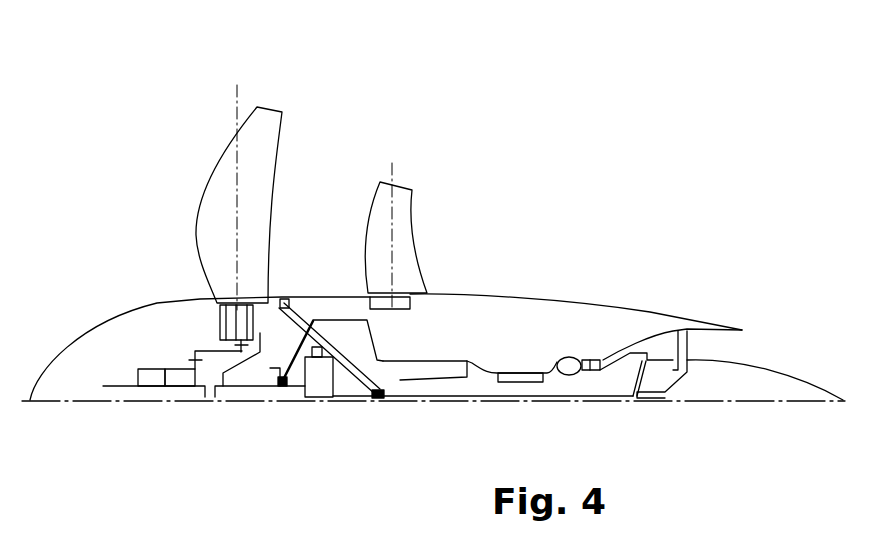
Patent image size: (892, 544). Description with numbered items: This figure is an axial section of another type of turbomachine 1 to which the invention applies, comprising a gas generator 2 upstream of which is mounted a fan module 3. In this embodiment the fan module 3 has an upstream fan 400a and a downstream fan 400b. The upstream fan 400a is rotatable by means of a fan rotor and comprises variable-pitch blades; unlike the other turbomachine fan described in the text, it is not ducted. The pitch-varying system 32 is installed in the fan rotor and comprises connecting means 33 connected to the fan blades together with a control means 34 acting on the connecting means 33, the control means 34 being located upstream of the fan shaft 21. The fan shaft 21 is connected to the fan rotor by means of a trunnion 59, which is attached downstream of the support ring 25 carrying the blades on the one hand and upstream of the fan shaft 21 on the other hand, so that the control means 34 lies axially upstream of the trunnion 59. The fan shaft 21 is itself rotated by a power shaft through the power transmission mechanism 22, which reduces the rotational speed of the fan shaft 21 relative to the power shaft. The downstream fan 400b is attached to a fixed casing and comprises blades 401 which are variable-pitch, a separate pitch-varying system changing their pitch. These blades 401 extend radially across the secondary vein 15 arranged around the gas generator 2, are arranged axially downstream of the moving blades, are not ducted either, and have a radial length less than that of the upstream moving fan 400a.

The turbomachine 1 is at (403, 96).
The gas generator 2 is at (540, 335).
The fan module 3 is at (130, 192).
The secondary vein 15 is at (626, 305).
The upstream fan 400a is at (213, 155).
The downstream fan 400b is at (417, 232).
The blades 401 is at (400, 278).
The support ring 25 is at (217, 326).
The connecting means 33 is at (197, 345).
The pitch-varying system 32 is at (157, 362).
The control means 34 is at (150, 407).
The trunnion 59 is at (243, 365).
The fan shaft 21 is at (281, 384).
The power transmission mechanism 22 is at (322, 407).